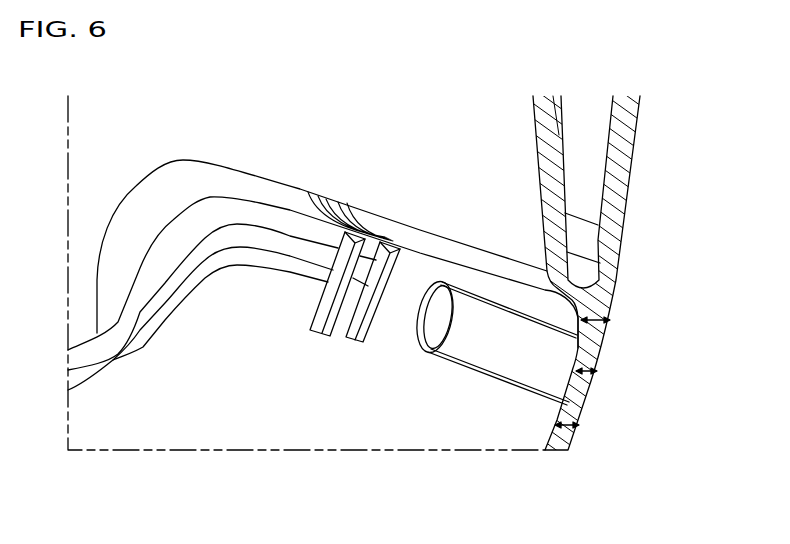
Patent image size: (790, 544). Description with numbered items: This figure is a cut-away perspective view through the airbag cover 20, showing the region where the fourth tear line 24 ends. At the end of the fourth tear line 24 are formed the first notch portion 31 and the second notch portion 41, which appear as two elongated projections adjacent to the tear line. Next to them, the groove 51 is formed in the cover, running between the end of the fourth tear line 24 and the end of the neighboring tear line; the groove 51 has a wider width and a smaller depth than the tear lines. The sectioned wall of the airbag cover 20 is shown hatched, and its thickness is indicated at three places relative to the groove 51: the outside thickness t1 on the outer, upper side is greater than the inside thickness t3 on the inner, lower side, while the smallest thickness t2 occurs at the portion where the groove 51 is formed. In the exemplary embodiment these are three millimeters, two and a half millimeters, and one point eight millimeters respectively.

The airbag cover 20 is at (648, 166).
The fourth tear line 24 is at (280, 247).
The first notch portion 31 is at (369, 341).
The second notch portion 41 is at (327, 334).
The groove 51 is at (506, 358).
The outside thickness t1 is at (597, 321).
The smallest thickness t2 is at (588, 371).
The inside thickness t3 is at (571, 425).